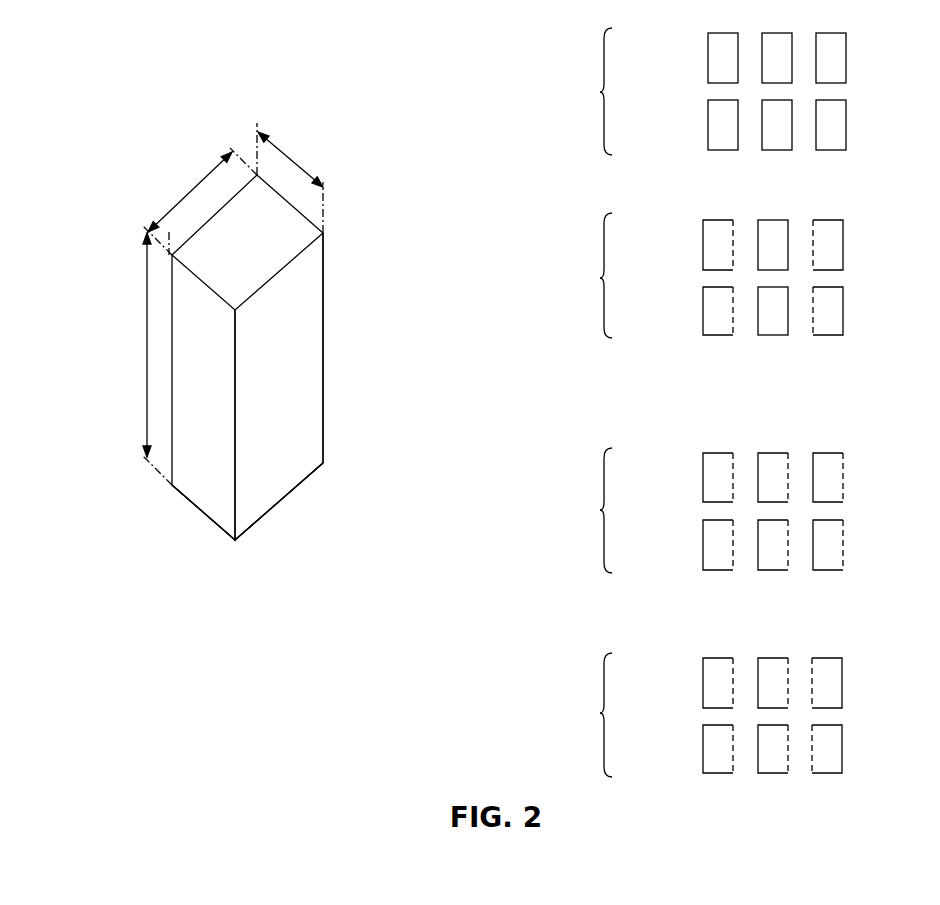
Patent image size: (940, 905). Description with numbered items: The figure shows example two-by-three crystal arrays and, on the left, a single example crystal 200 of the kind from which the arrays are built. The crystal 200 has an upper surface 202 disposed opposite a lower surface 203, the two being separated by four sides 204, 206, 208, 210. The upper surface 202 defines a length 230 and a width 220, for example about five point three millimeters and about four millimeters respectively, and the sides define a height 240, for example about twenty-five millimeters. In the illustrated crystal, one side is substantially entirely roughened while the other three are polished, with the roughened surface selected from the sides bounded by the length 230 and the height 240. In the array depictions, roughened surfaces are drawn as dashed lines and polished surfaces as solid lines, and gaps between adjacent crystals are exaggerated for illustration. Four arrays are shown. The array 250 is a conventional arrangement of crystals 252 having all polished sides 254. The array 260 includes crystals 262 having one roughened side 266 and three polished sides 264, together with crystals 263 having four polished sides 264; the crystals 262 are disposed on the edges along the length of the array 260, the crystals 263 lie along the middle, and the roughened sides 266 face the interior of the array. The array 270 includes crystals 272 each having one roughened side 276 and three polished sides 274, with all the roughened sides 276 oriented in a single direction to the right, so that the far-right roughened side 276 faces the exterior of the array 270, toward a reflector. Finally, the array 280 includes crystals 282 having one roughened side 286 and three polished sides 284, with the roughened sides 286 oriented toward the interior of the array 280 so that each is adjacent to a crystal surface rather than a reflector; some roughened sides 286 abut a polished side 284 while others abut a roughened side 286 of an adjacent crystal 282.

The crystal 200 is at (142, 192).
The upper surface 202 is at (257, 265).
The lower surface 203 is at (207, 562).
The side 204 is at (300, 372).
The side 206 is at (212, 482).
The side 208 is at (165, 392).
The side 210 is at (350, 275).
The width 220 is at (288, 153).
The length 230 is at (227, 162).
The height 240 is at (147, 350).
The array 250 is at (740, 79).
The crystal 252 is at (832, 33).
The polished side 254 is at (818, 47).
The array 260 is at (737, 279).
The crystal 262 is at (833, 220).
The crystal 263 is at (780, 220).
The polished side 264 is at (703, 247).
The roughened side 266 is at (735, 243).
The array 270 is at (737, 514).
The crystal 272 is at (833, 453).
The polished side 274 is at (758, 477).
The roughened side 276 is at (735, 490).
The array 280 is at (737, 713).
The crystal 282 is at (832, 658).
The polished side 284 is at (703, 682).
The roughened side 286 is at (732, 680).